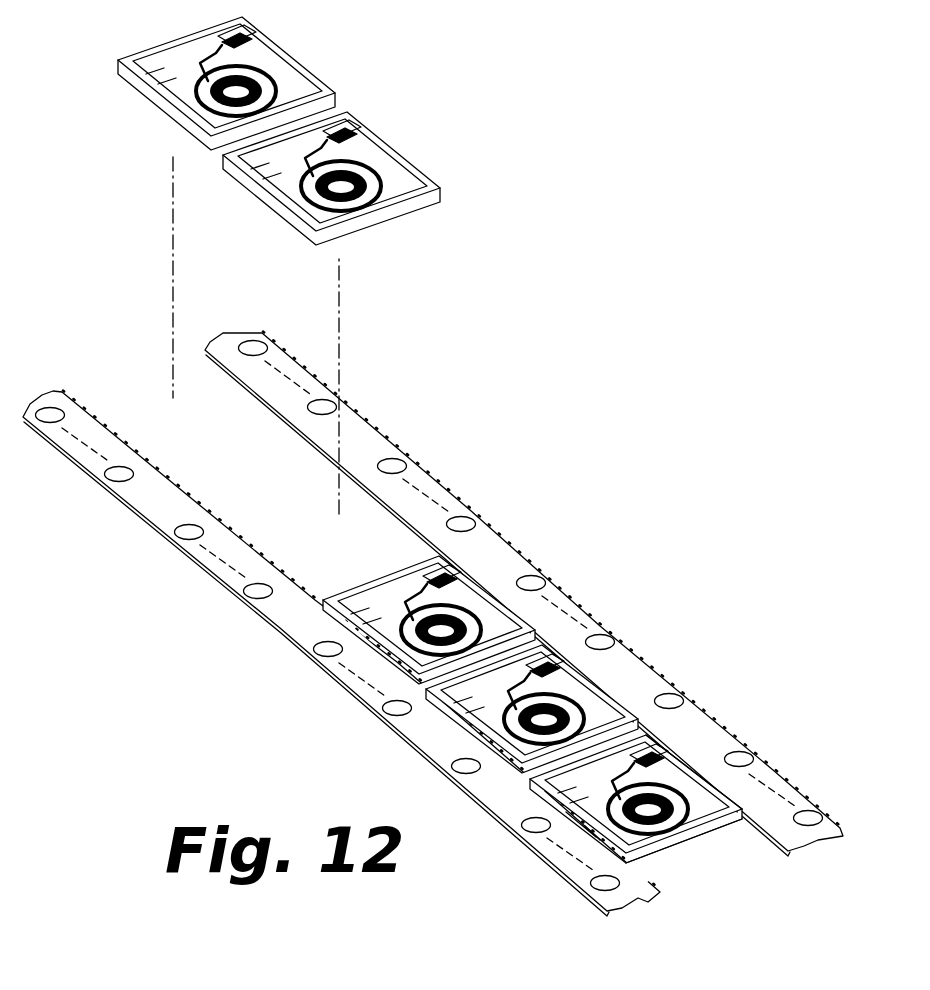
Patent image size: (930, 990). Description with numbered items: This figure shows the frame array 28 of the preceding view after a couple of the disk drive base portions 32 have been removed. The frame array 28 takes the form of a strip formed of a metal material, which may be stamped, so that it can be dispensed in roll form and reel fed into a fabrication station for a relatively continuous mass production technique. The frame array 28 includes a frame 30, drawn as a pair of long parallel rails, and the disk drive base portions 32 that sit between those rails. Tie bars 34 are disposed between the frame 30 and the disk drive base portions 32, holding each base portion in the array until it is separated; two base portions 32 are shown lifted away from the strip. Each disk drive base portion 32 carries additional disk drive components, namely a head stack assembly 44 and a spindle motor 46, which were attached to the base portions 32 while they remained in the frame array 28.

The frame array 28 is at (445, 428).
The frame 30 is at (147, 502).
The disk drive base portions 32 is at (453, 454).
The tie bars 34 is at (600, 856).
The head stack assemblies 44 is at (650, 735).
The spindle motors 46 is at (682, 820).